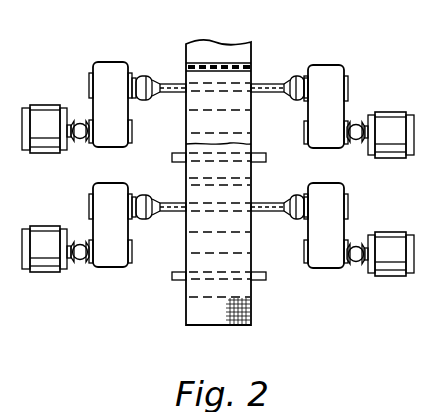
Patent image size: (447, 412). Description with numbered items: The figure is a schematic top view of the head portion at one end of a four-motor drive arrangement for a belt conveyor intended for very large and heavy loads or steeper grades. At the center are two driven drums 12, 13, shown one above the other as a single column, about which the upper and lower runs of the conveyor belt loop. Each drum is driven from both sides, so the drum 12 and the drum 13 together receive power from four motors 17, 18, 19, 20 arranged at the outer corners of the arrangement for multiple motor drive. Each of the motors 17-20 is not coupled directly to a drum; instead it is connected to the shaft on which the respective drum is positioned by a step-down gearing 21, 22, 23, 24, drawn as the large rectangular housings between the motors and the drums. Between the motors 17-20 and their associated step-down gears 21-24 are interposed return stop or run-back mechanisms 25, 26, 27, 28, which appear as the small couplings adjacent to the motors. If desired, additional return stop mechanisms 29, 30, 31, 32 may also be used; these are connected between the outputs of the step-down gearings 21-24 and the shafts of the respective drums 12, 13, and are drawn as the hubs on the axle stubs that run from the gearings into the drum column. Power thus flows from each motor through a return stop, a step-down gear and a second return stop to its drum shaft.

The driven drum 12 is at (240, 64).
The driven drum 13 is at (195, 237).
The motor 17 is at (395, 112).
The motor 18 is at (45, 107).
The motor 19 is at (388, 277).
The motor 20 is at (40, 273).
The step-down gearing 21 is at (328, 72).
The step-down gearing 22 is at (115, 67).
The step-down gearing 23 is at (330, 258).
The step-down gearing 24 is at (113, 258).
The return stop mechanism 25 is at (356, 123).
The return stop mechanism 26 is at (80, 142).
The return stop mechanism 27 is at (355, 264).
The return stop mechanism 28 is at (78, 262).
The additional return stop mechanism 29 is at (294, 77).
The additional return stop mechanism 30 is at (143, 75).
The additional return stop mechanism 31 is at (295, 219).
The additional return stop mechanism 32 is at (141, 217).